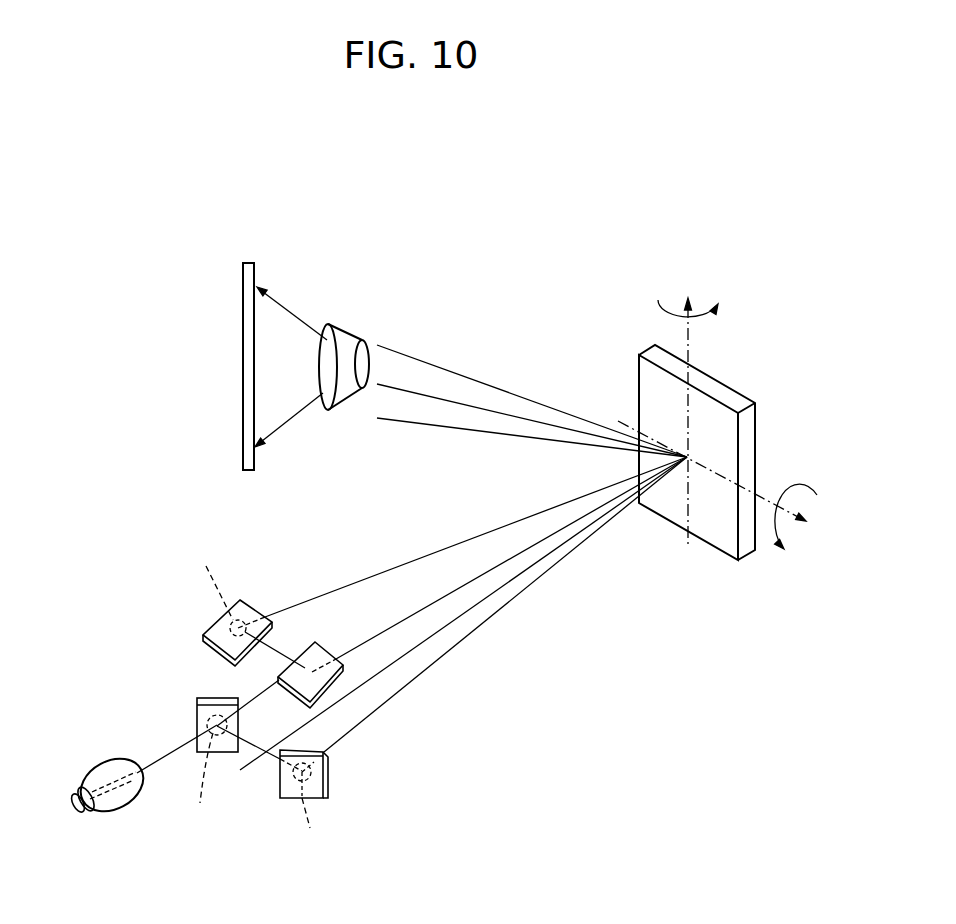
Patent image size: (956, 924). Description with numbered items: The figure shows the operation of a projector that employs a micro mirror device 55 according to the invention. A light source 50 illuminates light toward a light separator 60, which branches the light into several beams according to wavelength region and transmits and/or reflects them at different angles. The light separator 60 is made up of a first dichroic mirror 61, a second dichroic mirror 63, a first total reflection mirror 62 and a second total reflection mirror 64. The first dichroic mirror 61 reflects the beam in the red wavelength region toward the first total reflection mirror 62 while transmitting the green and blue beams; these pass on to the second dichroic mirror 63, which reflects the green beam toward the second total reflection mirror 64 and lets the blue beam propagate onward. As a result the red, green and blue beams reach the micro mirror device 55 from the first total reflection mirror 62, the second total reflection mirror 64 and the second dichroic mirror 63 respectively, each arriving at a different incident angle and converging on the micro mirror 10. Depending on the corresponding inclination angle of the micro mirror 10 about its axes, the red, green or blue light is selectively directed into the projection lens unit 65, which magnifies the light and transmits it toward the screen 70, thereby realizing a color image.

The micro mirror 10 is at (748, 438).
The light source 50 is at (70, 817).
The micro mirror device 55 is at (722, 415).
The light separator 60 is at (404, 658).
The first dichroic mirror 61 is at (197, 705).
The first total reflection mirror 62 is at (328, 773).
The second dichroic mirror 63 is at (328, 645).
The second total reflection mirror 64 is at (255, 605).
The projection lens unit 65 is at (338, 323).
The screen 70 is at (243, 283).